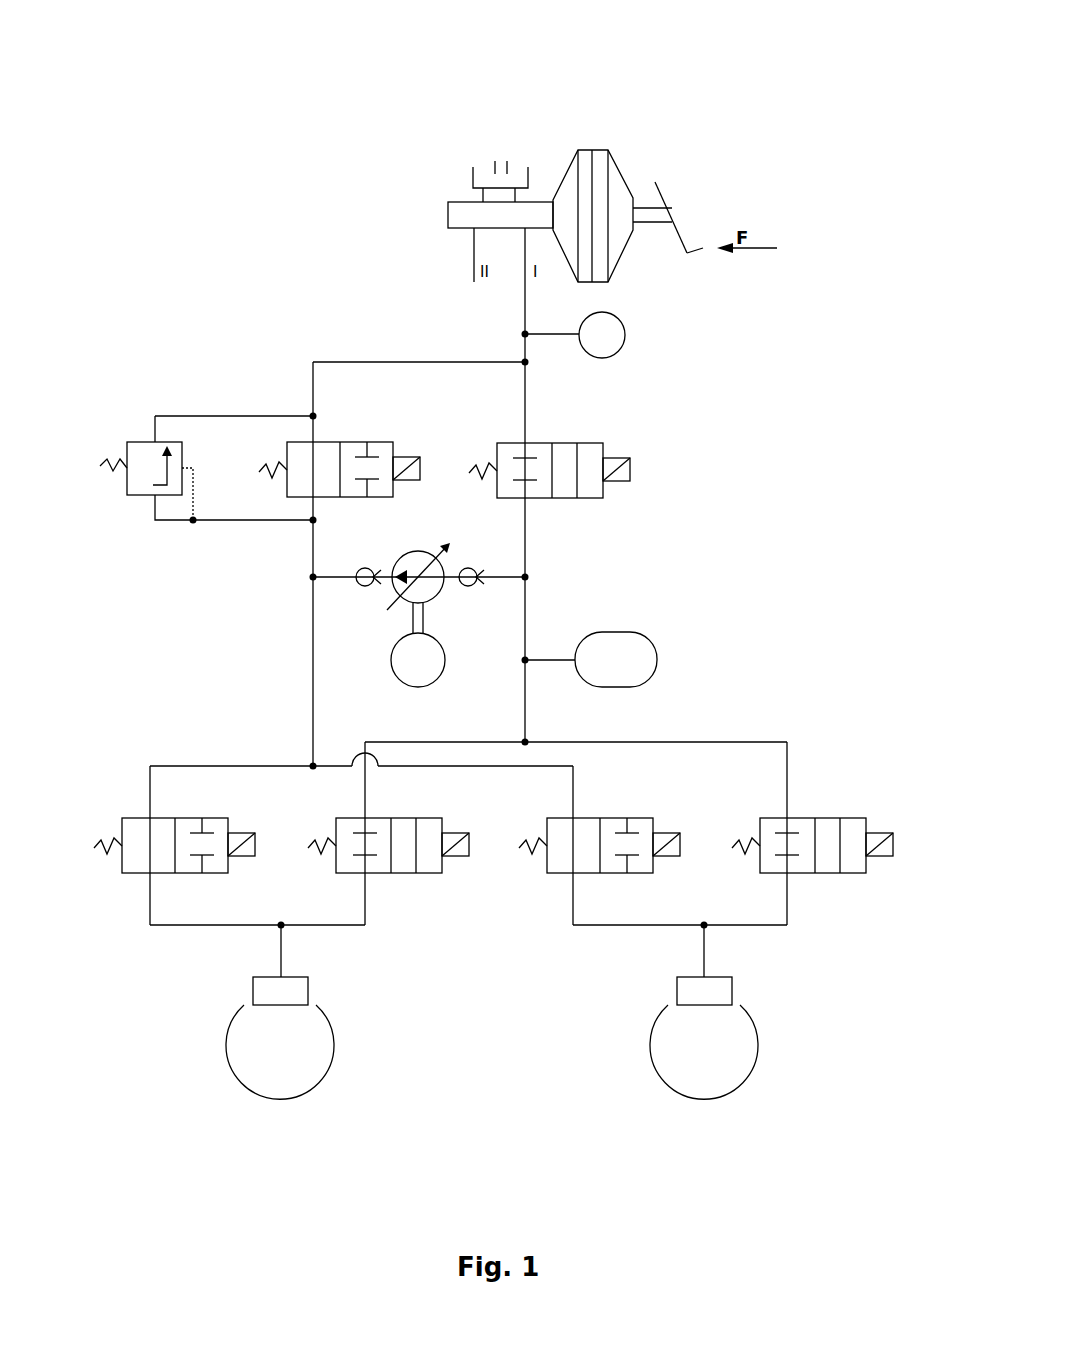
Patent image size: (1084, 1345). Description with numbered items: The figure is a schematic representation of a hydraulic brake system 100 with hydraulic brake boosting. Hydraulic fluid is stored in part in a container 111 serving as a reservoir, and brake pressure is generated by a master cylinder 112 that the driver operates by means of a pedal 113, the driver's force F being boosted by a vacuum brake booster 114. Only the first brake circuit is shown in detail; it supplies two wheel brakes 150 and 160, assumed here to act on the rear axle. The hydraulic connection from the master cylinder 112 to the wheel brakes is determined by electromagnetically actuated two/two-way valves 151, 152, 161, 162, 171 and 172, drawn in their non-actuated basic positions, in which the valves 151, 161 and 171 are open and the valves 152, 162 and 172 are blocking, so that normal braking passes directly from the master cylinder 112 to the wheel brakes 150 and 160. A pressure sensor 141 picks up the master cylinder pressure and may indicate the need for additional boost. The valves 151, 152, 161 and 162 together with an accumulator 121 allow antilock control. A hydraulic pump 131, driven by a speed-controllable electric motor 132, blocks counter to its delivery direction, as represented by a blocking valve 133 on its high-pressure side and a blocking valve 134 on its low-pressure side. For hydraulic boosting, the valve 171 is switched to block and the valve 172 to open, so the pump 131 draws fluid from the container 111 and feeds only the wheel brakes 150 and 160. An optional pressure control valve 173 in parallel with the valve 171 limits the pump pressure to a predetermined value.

The hydraulic brake system 100 is at (736, 86).
The container 111 is at (478, 168).
The master cylinder 112 is at (449, 203).
The pedal 113 is at (684, 247).
The brake booster 114 is at (592, 160).
The accumulator 121 is at (636, 648).
The hydraulic pump 131 is at (402, 553).
The electric motor 132 is at (430, 645).
The blocking valve 133 is at (365, 567).
The blocking valve 134 is at (468, 567).
The pressure sensor 141 is at (618, 330).
The wheel brake 150 is at (300, 985).
The 2/2-way valve 151 is at (220, 830).
The 2/2-way valve 152 is at (432, 830).
The wheel brake 160 is at (722, 985).
The 2/2-way valve 161 is at (642, 830).
The 2/2-way valve 162 is at (855, 830).
The 2/2-way valve 171 is at (378, 453).
The 2/2-way valve 172 is at (593, 453).
The pressure control valve 173 is at (138, 450).